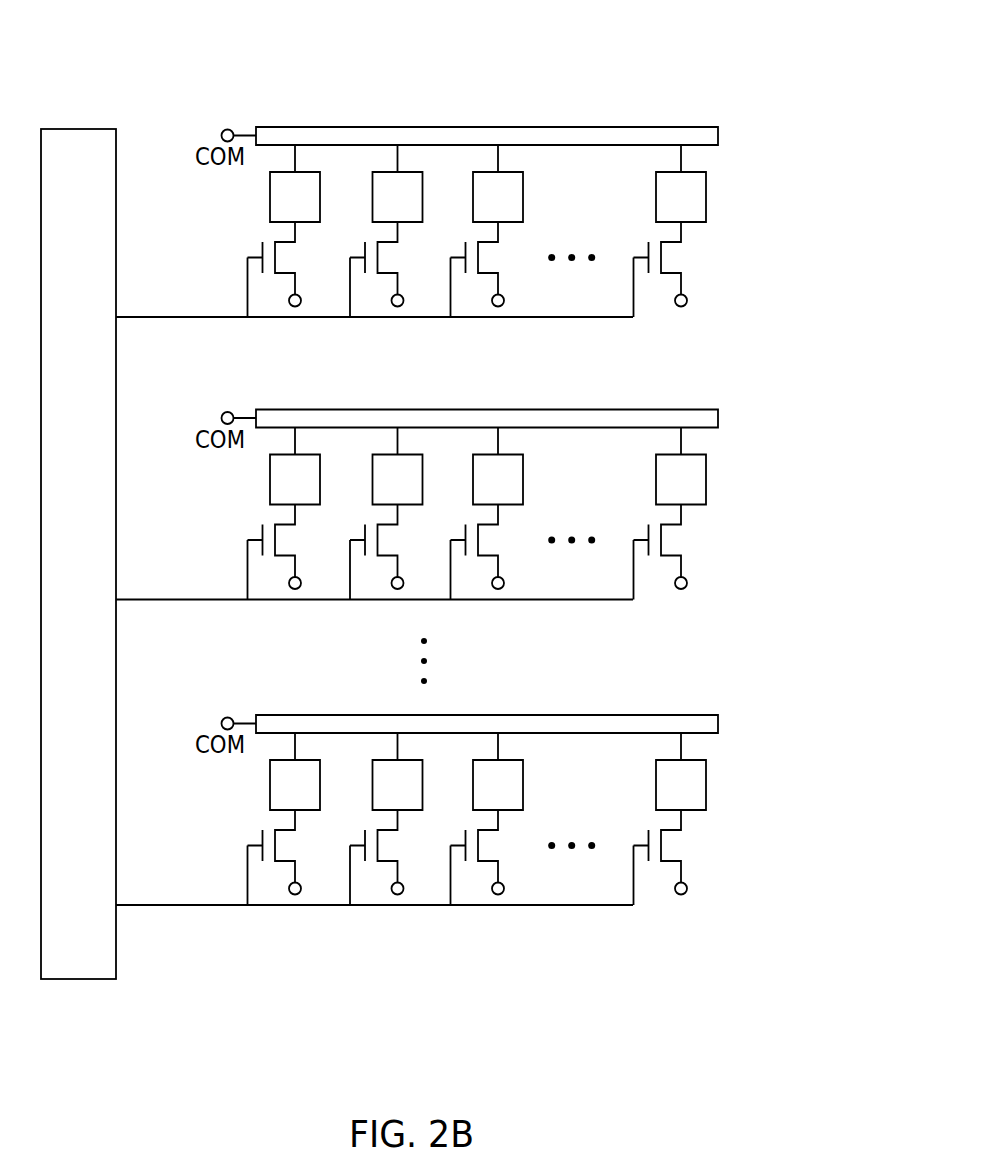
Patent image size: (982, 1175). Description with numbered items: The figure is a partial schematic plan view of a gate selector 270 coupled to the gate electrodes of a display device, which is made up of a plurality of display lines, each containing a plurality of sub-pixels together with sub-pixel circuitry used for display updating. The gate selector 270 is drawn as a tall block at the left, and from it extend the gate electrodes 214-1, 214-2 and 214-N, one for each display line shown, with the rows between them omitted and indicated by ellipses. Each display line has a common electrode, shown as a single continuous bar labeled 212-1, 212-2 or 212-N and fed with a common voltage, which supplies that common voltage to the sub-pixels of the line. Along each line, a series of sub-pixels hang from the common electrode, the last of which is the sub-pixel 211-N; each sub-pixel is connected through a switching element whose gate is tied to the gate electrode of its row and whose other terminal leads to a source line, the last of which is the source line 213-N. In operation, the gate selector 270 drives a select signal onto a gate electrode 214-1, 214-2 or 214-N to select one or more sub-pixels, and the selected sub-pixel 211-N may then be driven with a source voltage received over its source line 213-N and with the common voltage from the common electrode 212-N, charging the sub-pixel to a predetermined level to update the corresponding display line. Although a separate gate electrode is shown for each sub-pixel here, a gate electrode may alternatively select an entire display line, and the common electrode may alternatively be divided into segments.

The gate selector 270 is at (80, 128).
The common electrode 212-1 is at (718, 131).
The common electrode 212-2 is at (718, 418).
The common electrode 212-N is at (718, 720).
The sub-pixel 211-N is at (706, 197).
The source line 213-N is at (687, 300).
The gate electrode 214-1 is at (190, 318).
The gate electrode 214-2 is at (190, 601).
The gate electrode 214-N is at (200, 906).